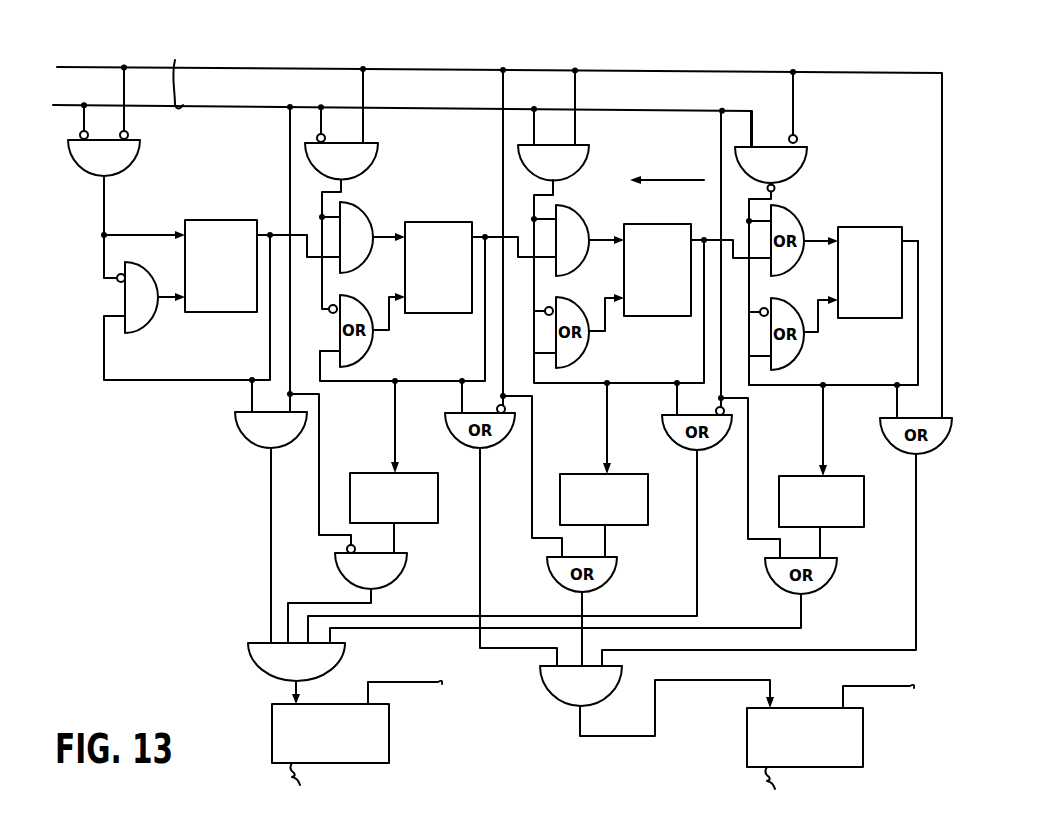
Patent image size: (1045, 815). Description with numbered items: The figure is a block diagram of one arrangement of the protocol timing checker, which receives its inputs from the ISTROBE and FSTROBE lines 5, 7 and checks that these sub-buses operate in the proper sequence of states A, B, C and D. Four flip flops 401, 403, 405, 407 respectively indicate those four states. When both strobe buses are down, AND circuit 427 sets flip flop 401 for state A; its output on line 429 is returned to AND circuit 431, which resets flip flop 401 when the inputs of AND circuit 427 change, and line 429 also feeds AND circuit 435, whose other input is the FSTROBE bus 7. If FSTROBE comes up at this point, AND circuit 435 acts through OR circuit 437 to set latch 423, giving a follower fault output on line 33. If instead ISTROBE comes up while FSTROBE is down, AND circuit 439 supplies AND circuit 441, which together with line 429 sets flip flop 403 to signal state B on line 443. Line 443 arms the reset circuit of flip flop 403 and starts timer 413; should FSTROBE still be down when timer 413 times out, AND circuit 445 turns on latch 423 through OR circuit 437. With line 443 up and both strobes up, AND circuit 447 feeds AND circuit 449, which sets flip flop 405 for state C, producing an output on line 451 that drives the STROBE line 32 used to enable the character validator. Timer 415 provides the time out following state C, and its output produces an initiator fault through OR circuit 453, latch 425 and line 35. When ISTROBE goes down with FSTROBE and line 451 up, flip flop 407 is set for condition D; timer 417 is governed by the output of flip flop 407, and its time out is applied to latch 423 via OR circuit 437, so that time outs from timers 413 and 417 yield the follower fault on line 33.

The ISTROBE line 5 is at (83, 67).
The FSTROBE line 7 is at (220, 110).
The AND circuit 427 is at (140, 160).
The line 429 is at (289, 236).
The AND circuit 431 is at (140, 333).
The flip flop 401 is at (205, 220).
The AND circuit 435 is at (236, 425).
The AND circuit 439 is at (376, 160).
The AND circuit 441 is at (372, 222).
The flip flop 403 is at (418, 222).
The line 443 is at (483, 233).
The timer 413 is at (414, 472).
The AND circuit 445 is at (405, 572).
The OR circuit 437 is at (255, 660).
The latch 423 is at (389, 716).
The signal line 33 is at (298, 772).
The AND circuit 447 is at (589, 158).
The STROBE line 32 is at (634, 184).
The AND circuit 449 is at (580, 268).
The flip flop 405 is at (641, 224).
The timer 415 is at (624, 473).
The OR circuit 453 is at (546, 693).
The line 451 is at (775, 193).
The flip flop 407 is at (855, 227).
The timer 417 is at (840, 475).
The latch 425 is at (863, 718).
The signal line 35 is at (773, 776).